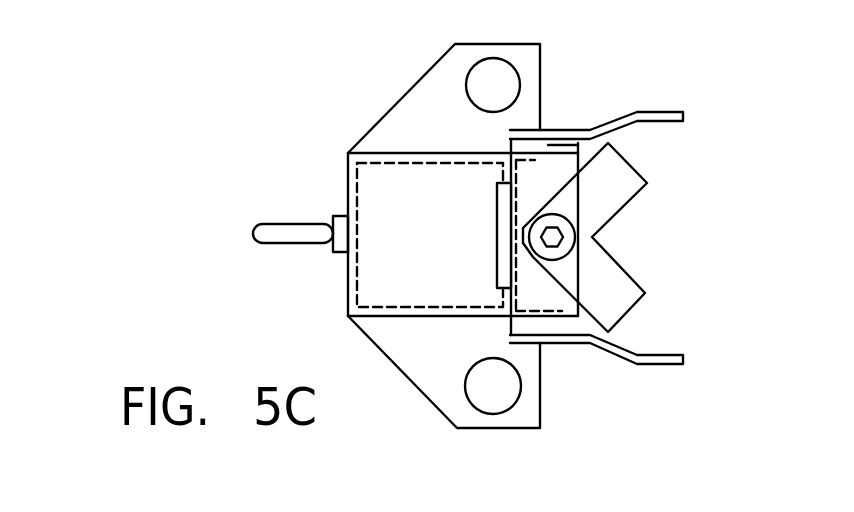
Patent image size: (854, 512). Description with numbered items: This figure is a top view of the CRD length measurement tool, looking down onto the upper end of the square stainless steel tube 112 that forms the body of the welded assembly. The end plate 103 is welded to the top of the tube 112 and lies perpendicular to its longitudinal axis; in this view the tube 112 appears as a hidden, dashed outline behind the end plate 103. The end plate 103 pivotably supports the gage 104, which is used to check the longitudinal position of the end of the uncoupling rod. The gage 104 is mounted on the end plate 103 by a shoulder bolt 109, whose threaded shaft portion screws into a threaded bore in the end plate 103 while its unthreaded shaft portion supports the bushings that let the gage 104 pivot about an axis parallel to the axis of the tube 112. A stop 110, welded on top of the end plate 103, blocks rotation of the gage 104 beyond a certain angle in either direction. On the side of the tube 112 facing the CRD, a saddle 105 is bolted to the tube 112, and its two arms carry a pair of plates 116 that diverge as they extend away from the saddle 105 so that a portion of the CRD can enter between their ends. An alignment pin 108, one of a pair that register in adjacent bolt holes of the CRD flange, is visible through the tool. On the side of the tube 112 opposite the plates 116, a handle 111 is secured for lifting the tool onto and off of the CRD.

The end plate 103 is at (535, 185).
The gage 104 is at (606, 232).
The saddle 105 is at (557, 327).
The alignment pin 108 is at (473, 82).
The shoulder bolt 109 is at (568, 251).
The stop 110 is at (497, 272).
The handle 111 is at (295, 223).
The tube 112 is at (347, 284).
The plate 116 is at (663, 110).